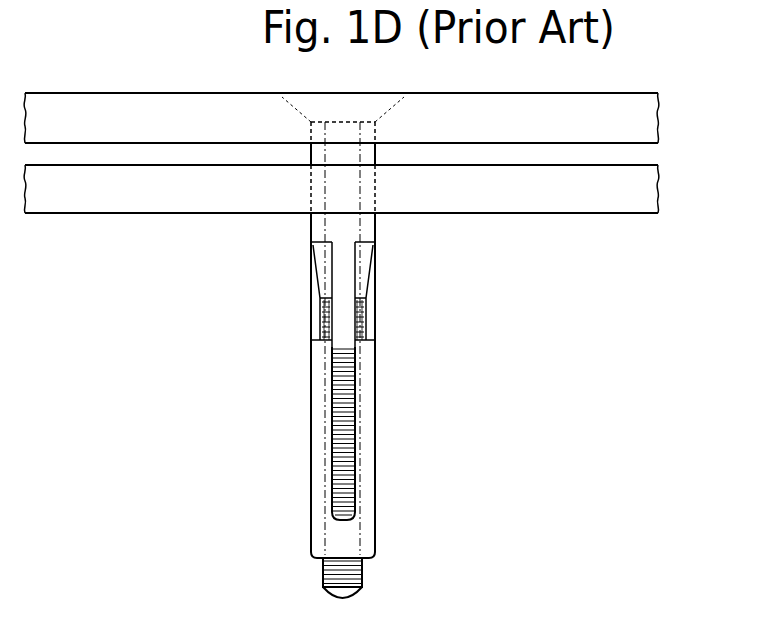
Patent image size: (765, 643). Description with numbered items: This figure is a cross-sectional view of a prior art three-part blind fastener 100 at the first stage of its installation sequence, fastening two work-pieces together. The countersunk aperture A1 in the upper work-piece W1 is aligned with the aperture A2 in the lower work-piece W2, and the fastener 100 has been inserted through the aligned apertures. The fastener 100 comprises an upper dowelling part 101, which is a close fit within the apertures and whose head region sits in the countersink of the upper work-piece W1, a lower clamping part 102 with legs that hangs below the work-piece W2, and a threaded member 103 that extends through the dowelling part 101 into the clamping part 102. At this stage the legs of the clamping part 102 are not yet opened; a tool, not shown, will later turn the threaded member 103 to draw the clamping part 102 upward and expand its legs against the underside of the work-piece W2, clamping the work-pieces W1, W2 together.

The fastener 100 is at (205, 447).
The upper dowelling part 101 is at (376, 224).
The lower clamping part 102 is at (312, 400).
The threaded member 103 is at (323, 574).
The work-piece W1 is at (608, 93).
The work-piece W2 is at (607, 213).
The countersunk aperture A1 is at (296, 110).
The aperture A2 is at (307, 194).